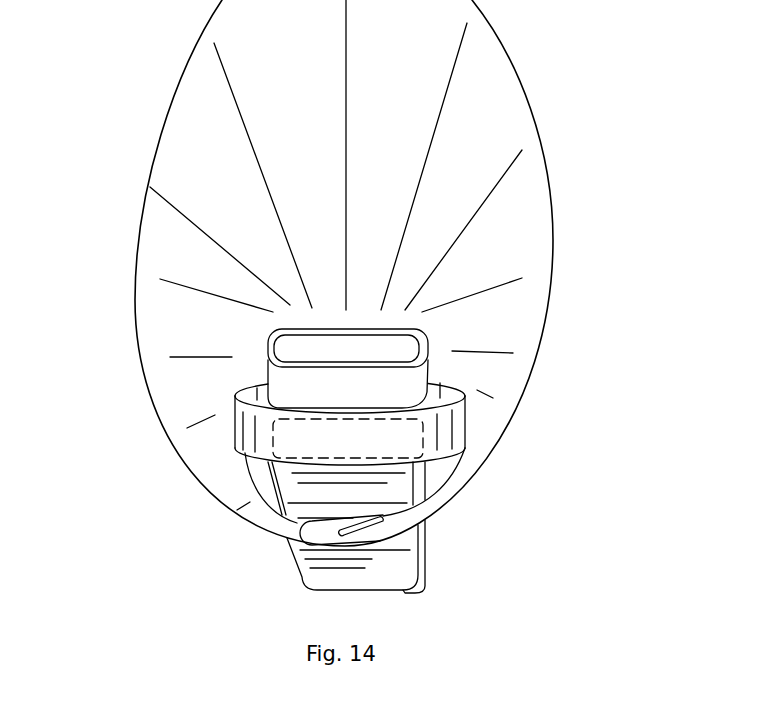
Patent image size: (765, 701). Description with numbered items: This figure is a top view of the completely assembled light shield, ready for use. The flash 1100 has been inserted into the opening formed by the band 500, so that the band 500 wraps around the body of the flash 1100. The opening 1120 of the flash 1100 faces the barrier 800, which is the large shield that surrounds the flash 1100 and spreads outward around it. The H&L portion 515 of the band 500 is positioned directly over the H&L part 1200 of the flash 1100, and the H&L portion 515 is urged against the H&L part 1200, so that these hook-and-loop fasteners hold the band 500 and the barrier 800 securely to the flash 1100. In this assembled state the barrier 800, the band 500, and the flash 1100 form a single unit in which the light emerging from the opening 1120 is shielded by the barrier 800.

The barrier 800 is at (590, 309).
The opening 1120 is at (268, 345).
The band 500 is at (466, 423).
The H&L portion 515 is at (228, 440).
The H&L part 1200 is at (273, 438).
The flash 1100 is at (450, 532).